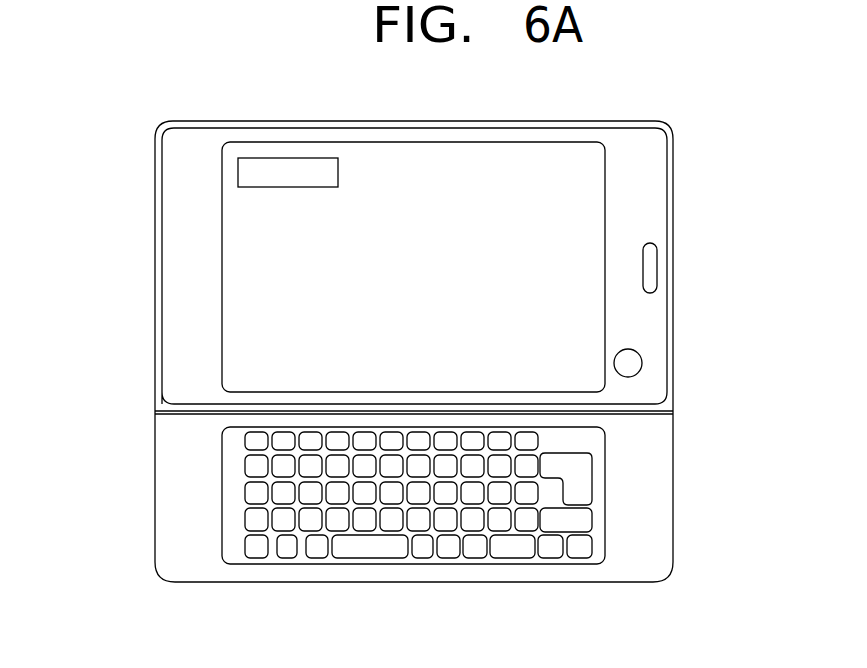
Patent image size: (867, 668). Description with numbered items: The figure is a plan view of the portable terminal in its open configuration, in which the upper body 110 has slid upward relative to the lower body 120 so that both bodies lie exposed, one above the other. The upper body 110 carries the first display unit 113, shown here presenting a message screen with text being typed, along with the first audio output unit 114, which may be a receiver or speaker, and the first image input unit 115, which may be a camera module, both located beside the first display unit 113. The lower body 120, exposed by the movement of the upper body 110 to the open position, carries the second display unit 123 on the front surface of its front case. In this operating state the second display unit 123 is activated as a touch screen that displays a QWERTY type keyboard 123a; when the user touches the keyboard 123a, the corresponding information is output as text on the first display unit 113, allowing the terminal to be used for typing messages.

The upper body 110 is at (154, 234).
The lower body 120 is at (154, 483).
The first display unit 113 is at (568, 198).
The first audio output unit 114 is at (650, 266).
The first image input unit 115 is at (632, 362).
The second display unit 123 is at (494, 495).
The keyboard 123a is at (525, 466).